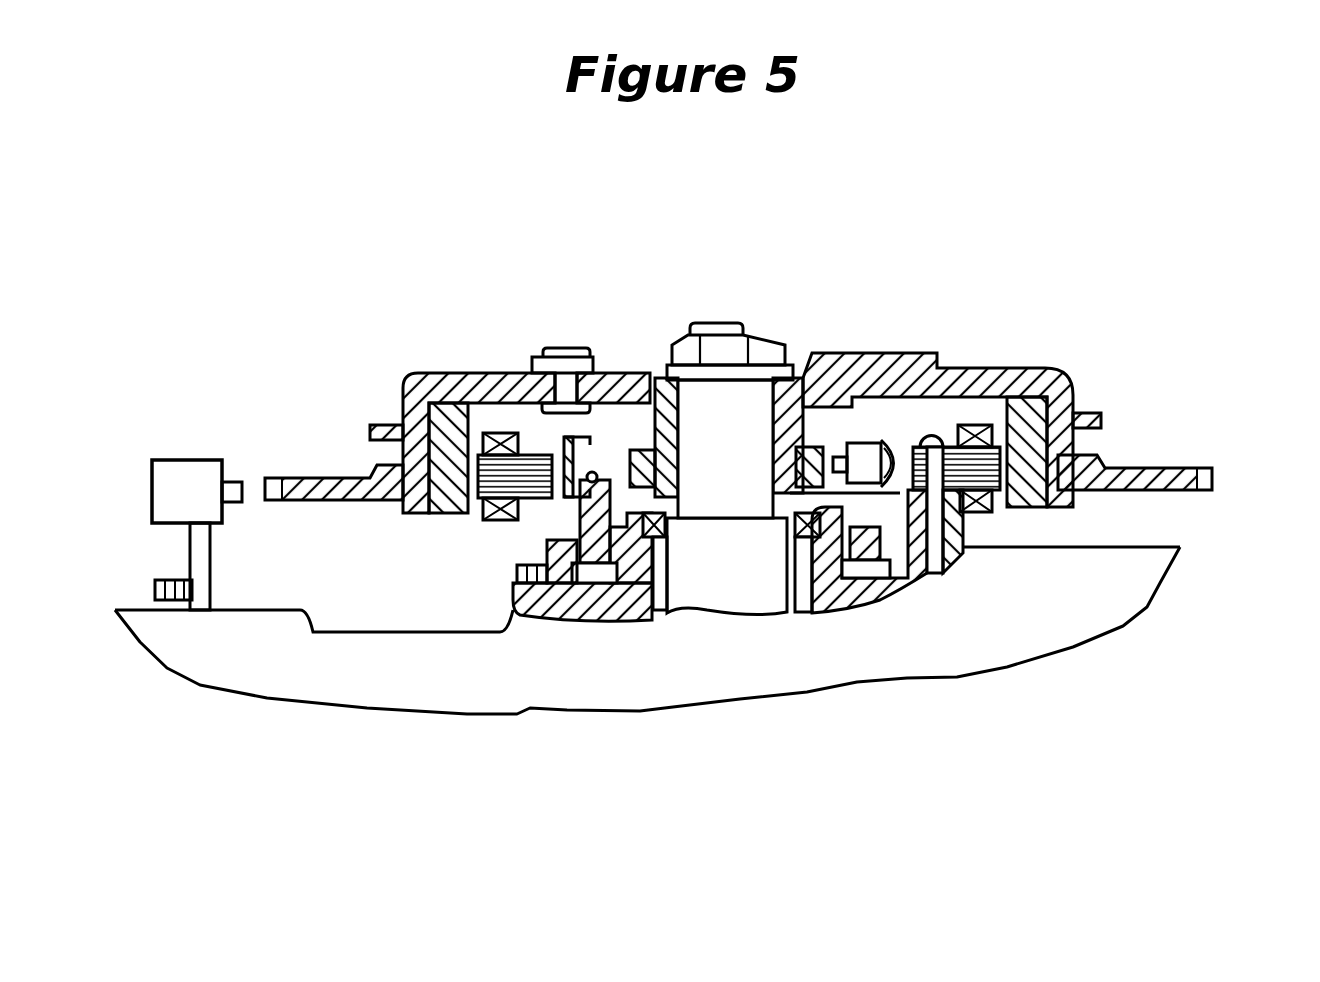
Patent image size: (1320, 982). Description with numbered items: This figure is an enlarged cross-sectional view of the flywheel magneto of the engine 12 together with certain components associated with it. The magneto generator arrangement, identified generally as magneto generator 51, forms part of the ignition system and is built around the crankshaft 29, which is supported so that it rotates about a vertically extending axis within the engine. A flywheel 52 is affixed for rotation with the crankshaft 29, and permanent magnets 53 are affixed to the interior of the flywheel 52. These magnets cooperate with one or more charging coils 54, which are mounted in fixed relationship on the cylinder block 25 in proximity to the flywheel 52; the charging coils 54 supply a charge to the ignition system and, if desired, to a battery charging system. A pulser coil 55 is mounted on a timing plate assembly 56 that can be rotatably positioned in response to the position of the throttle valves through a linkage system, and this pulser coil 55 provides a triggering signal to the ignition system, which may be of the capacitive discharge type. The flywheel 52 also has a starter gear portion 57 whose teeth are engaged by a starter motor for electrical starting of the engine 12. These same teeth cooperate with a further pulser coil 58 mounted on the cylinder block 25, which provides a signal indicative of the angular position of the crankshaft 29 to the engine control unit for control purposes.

The engine 12 is at (1162, 408).
The cylinder block 25 is at (1152, 541).
The crankshaft 29 is at (727, 390).
The magneto generator 51 is at (966, 333).
The flywheel 52 is at (447, 372).
The permanent magnets 53 is at (442, 515).
The charging coils 54 is at (502, 520).
The pulser coil 55 is at (862, 443).
The timing plate assembly 56 is at (575, 458).
The starter gear portion 57 is at (287, 477).
The pulser coil 58 is at (165, 488).